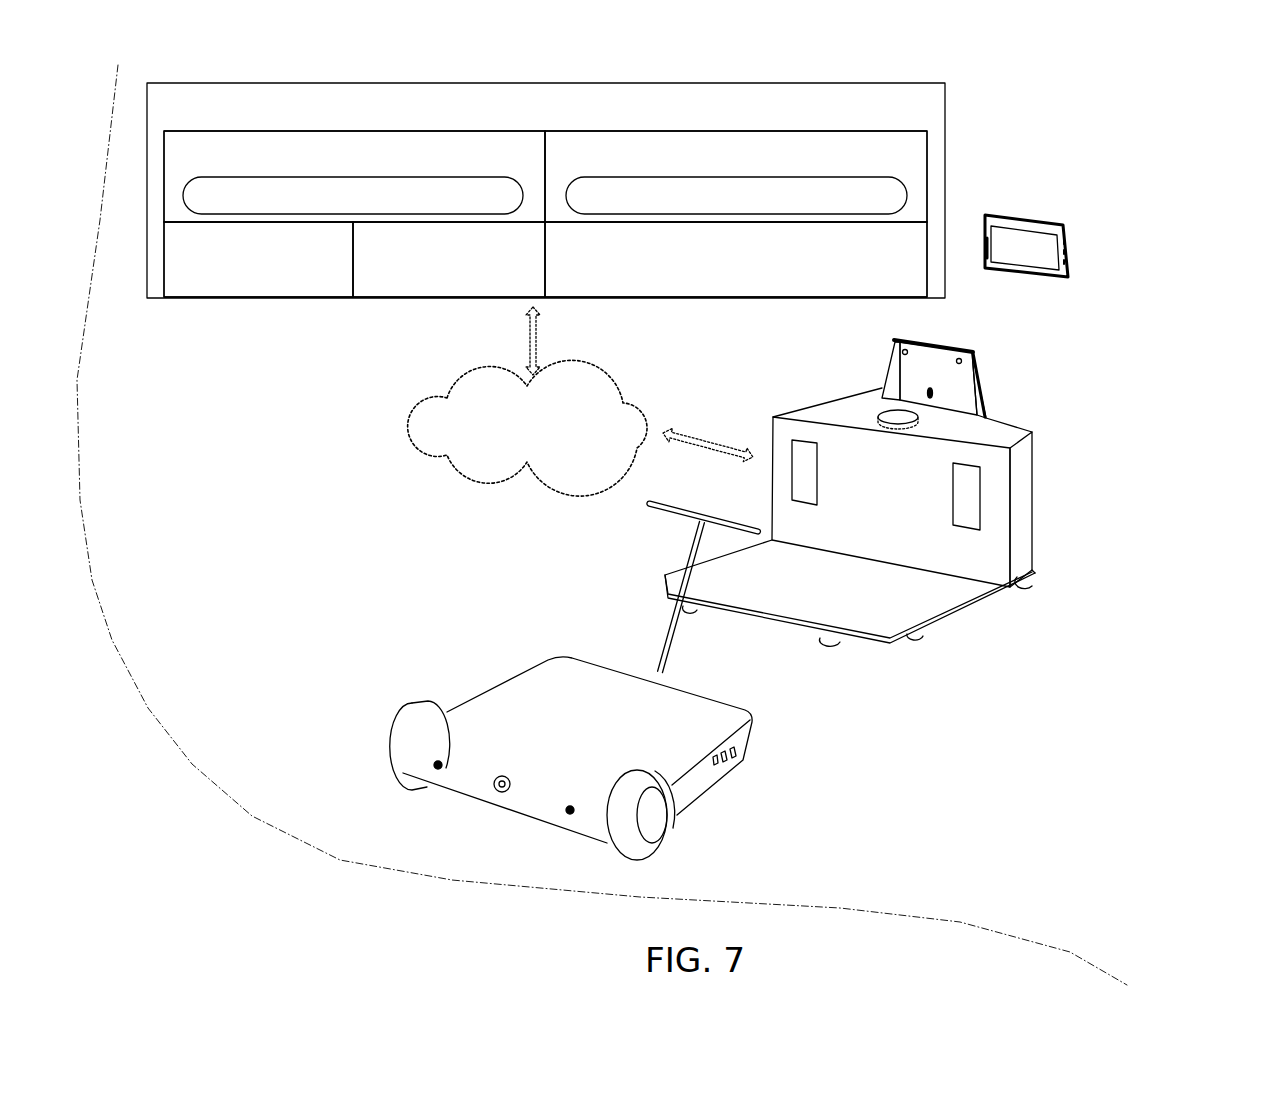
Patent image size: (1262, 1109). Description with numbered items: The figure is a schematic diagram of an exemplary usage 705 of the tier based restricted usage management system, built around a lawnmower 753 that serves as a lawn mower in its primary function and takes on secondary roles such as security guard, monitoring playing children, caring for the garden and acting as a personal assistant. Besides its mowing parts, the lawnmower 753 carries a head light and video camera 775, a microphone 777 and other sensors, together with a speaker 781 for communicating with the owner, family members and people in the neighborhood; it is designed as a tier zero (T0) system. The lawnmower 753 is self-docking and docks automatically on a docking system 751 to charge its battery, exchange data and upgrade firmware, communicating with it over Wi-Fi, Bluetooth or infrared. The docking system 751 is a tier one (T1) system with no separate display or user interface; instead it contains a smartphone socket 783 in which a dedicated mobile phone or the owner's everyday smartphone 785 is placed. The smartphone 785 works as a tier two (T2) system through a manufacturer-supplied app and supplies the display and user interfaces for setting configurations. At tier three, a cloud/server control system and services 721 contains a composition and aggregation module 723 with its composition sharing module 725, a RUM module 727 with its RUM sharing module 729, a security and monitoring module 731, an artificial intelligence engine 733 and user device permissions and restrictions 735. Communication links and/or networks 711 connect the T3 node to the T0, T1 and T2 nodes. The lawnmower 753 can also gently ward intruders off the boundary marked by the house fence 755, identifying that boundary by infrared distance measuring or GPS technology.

The exemplary usage 705 is at (1176, 100).
The communication links and/or networks 711 is at (598, 456).
The cloud/server control system and services 721 is at (803, 118).
The composition and aggregation module 723 is at (528, 170).
The composition sharing module 725 is at (483, 206).
The RUM module 727 is at (785, 170).
The RUM sharing module 729 is at (828, 206).
The security and monitoring module 731 is at (338, 286).
The artificial intelligence engine 733 is at (537, 286).
The user device permissions and restrictions 735 is at (823, 286).
The docking system 751 is at (1022, 528).
The lawnmower 753 is at (713, 692).
The house fence 755 is at (1072, 952).
The head light and video camera 775 is at (495, 783).
The microphone 777 is at (567, 813).
The speaker 781 is at (740, 760).
The smartphone socket 783 is at (950, 346).
The smartphone 785 is at (1046, 223).